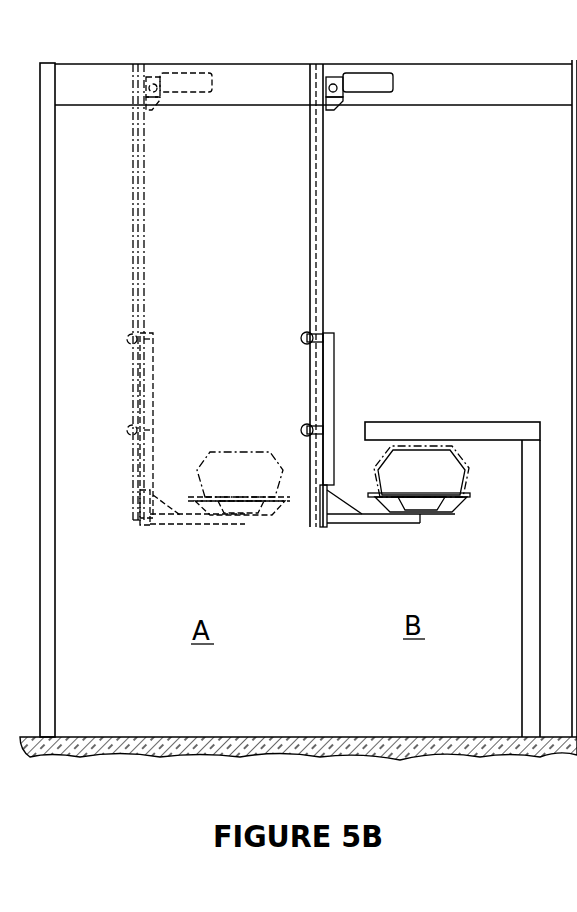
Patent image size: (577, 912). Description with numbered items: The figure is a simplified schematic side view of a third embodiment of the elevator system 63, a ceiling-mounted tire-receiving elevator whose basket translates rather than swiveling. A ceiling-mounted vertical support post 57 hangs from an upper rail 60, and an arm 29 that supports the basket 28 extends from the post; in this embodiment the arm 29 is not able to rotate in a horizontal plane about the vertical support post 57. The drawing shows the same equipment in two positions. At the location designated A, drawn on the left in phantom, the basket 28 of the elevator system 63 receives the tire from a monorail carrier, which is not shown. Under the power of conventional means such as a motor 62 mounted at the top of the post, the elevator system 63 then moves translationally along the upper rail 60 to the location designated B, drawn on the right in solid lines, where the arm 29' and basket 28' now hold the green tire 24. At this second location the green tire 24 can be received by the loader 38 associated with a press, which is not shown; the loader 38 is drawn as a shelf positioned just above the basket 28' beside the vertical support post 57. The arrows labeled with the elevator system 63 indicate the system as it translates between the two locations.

The upper rail 60 is at (258, 80).
The motor 62 is at (199, 73).
The elevator system 63 is at (148, 193).
The vertical support post 57 is at (137, 258).
The green tire 24 is at (248, 450).
The basket 28 is at (239, 540).
The basket 28' is at (419, 535).
The arm 29 is at (186, 458).
The arm 29' is at (378, 461).
The loader 38 is at (453, 430).